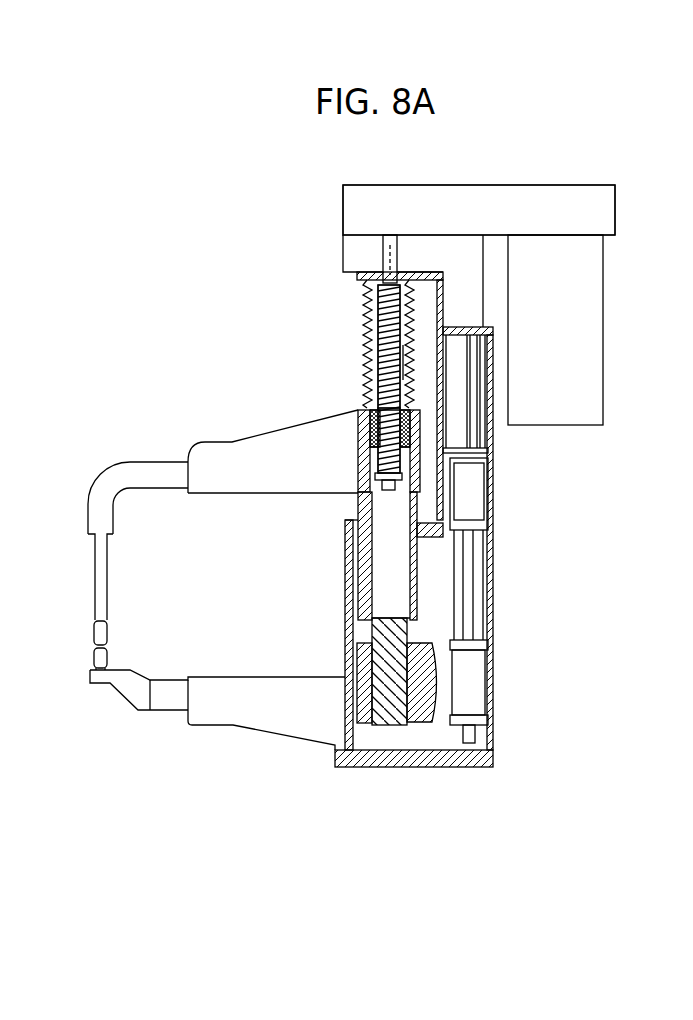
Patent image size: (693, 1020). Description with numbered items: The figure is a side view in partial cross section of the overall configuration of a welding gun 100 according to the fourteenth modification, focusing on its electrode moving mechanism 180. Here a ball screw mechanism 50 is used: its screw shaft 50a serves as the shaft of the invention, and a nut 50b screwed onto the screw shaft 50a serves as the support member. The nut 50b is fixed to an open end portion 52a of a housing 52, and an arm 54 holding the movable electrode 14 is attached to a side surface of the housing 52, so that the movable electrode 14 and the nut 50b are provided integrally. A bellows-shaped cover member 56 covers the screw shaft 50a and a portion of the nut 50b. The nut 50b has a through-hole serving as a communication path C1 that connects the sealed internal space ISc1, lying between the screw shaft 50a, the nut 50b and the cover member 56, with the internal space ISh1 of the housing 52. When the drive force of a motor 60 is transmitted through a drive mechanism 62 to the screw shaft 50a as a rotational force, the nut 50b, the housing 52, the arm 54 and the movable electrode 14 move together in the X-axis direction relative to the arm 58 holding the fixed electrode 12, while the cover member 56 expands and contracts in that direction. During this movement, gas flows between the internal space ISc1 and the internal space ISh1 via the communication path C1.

The welding gun 100 is at (510, 177).
The drive mechanism 62 is at (600, 213).
The motor 60 is at (603, 293).
The electrode moving mechanism 180 is at (310, 262).
The bellows-shaped cover member 56 is at (363, 308).
The ball screw mechanism 50 is at (280, 332).
The screw shaft 50a is at (378, 354).
The nut 50b is at (367, 405).
The sealed internal space ISc1 is at (418, 372).
The arm 54 is at (212, 450).
The communication path C1 is at (373, 430).
The open end portion 52a is at (380, 450).
The housing 52 is at (363, 507).
The internal space ISh1 is at (382, 583).
The movable electrode 14 is at (102, 633).
The fixed electrode 12 is at (102, 655).
The arm 58 is at (222, 710).